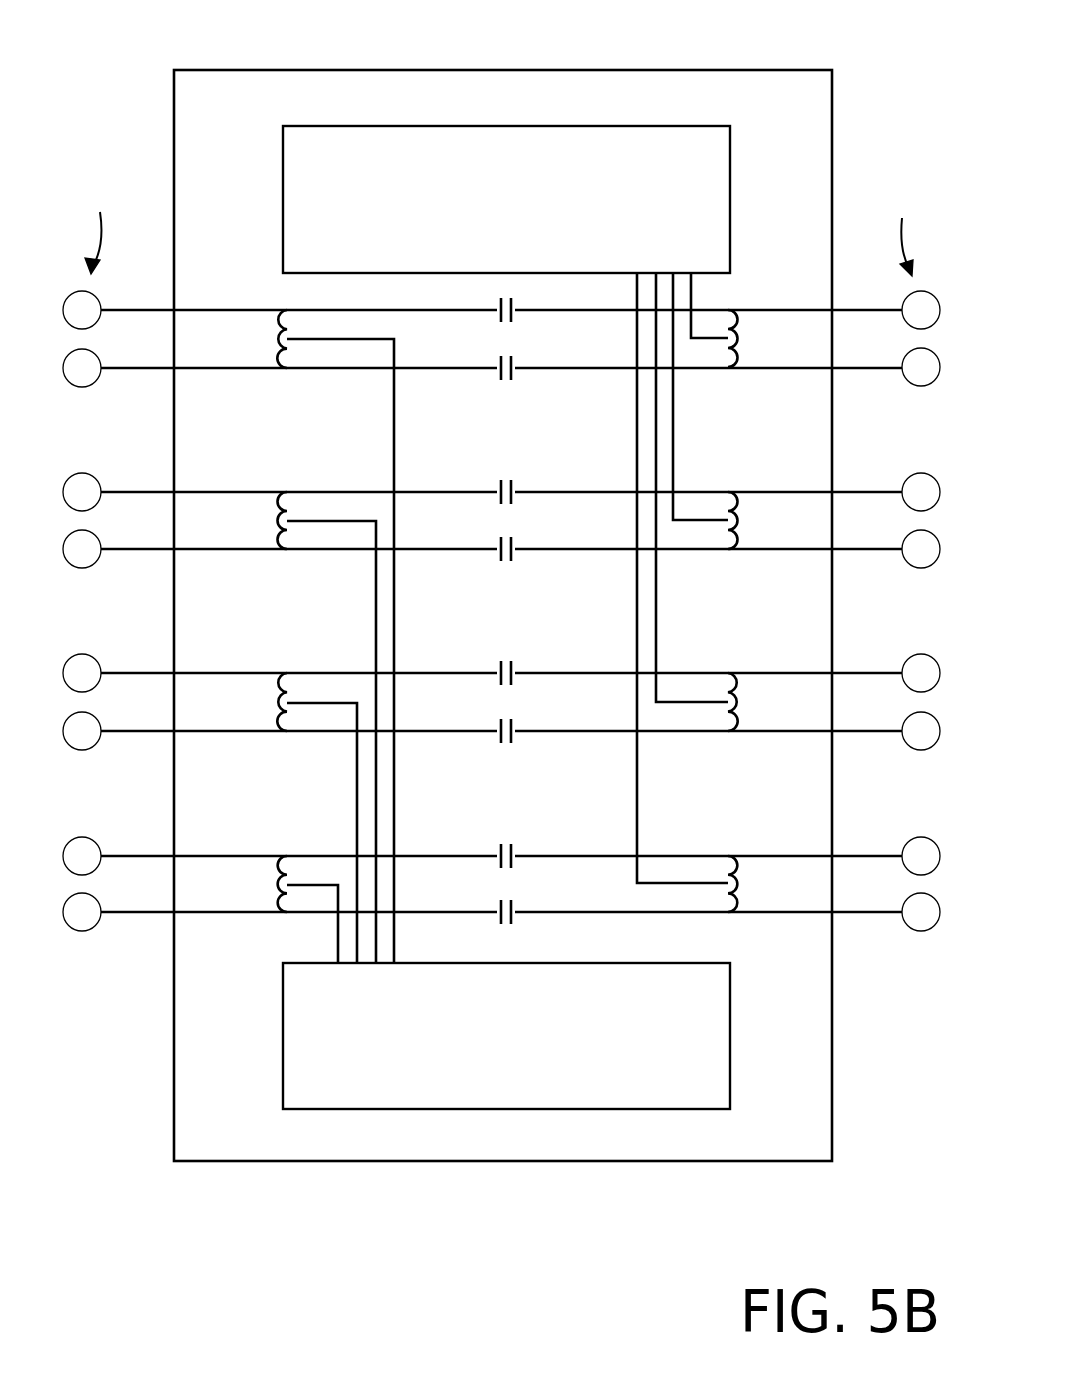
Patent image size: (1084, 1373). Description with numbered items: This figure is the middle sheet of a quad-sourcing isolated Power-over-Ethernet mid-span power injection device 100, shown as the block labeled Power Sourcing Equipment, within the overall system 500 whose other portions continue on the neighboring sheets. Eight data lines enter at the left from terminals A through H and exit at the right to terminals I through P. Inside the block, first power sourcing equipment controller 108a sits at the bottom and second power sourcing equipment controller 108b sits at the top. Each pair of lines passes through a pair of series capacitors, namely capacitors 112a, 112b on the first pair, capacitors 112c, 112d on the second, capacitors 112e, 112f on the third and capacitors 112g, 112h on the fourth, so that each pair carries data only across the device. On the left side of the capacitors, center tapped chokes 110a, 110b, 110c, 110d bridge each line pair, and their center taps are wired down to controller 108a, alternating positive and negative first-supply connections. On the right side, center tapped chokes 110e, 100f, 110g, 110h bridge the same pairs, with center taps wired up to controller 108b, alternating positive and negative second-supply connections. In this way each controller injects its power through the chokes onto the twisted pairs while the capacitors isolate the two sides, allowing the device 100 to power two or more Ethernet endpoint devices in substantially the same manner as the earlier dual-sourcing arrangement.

The mid-span power injection device 100 is at (272, 70).
The power over data lines system 500 is at (220, 1240).
The first power sourcing equipment controller 108a is at (506, 1036).
The second power sourcing equipment controller 108b is at (506, 199).
The center tapped choke 110a is at (311, 636).
The center tapped choke 110b is at (302, 727).
The center tapped choke 110c is at (293, 818).
The center tapped choke 110d is at (283, 909).
The center tapped choke 110e is at (736, 320).
The center-tapped inductor (transformer winding) 100f is at (729, 411).
The center tapped choke 110g is at (723, 502).
The center tapped choke 110h is at (713, 593).
The capacitor 112a is at (508, 299).
The capacitor 112b is at (508, 379).
The capacitor 112c is at (508, 481).
The capacitor 112d is at (508, 560).
The capacitor 112e is at (508, 663).
The capacitor 112f is at (509, 742).
The capacitor 112g is at (508, 845).
The capacitor 112h is at (508, 923).